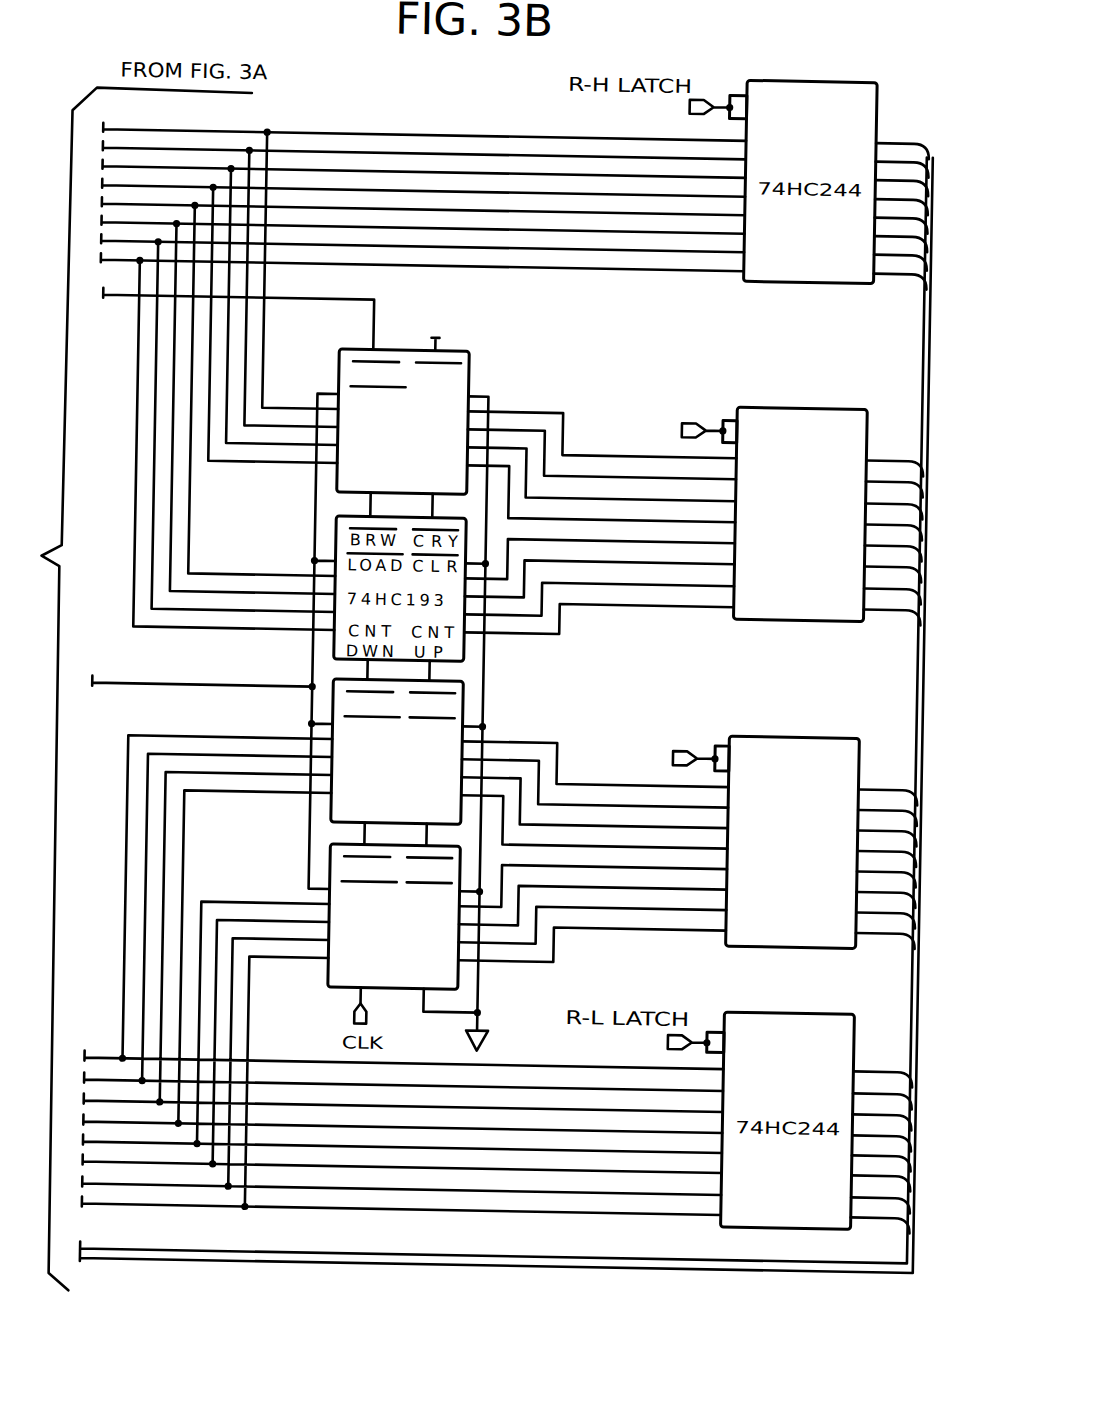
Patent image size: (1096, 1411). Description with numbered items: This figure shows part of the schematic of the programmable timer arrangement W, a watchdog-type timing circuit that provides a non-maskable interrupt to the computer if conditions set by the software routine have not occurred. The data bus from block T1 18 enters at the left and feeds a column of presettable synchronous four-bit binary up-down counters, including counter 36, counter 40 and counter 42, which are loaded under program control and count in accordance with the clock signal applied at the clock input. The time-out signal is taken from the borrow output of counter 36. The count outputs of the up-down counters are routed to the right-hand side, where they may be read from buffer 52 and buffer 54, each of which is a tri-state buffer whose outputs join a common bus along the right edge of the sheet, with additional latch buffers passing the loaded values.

The block T1 18 is at (377, 124).
The programmable timing circuit W is at (464, 118).
The presettable synchronous 4-bit binary up-down counter 36 is at (464, 383).
The presettable synchronous 4-bit binary up-down counter 40 is at (465, 704).
The presettable synchronous 4-bit binary up-down counter 42 is at (331, 875).
The buffer 52 is at (812, 592).
The buffer 54 is at (812, 918).